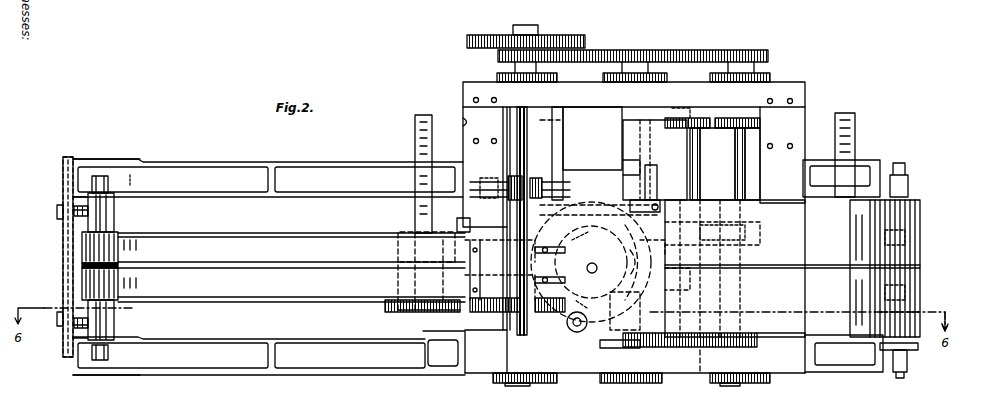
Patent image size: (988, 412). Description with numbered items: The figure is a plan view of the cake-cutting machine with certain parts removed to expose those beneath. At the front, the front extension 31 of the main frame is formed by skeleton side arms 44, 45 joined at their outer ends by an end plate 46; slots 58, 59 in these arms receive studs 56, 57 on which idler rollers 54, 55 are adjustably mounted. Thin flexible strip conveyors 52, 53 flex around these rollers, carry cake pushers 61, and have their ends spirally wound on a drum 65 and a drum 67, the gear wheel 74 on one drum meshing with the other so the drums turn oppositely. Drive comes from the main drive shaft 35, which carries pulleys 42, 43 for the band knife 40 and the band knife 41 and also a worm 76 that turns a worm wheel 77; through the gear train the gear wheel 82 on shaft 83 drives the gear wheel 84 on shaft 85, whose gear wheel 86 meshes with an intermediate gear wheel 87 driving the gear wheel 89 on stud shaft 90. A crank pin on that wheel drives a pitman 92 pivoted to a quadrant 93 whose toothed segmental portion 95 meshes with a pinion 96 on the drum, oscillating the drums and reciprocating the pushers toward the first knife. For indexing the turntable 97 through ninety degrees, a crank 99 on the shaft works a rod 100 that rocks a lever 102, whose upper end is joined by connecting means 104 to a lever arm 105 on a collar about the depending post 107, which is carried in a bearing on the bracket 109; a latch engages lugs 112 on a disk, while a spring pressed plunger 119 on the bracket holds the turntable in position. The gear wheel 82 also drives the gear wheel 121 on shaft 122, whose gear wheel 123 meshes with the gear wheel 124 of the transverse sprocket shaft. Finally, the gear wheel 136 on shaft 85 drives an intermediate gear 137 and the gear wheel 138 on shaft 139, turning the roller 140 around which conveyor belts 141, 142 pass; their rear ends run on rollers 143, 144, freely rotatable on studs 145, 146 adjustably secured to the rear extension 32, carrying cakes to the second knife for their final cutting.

The front extension 31 is at (125, 159).
The rear extension 32 is at (875, 372).
The main drive shaft 35 is at (653, 192).
The band knife 40 is at (425, 114).
The band knife 41 is at (840, 113).
The pulley 42 is at (415, 139).
The pulley 43 is at (856, 129).
The side arm 44 is at (268, 168).
The side arm 45 is at (269, 361).
The end plate 46 is at (63, 248).
The strip conveyor 52 is at (310, 296).
The strip conveyor 53 is at (322, 234).
The idler roller 54 is at (118, 233).
The idler roller 55 is at (118, 300).
The stud 56 is at (110, 187).
The stud 57 is at (112, 353).
The slot 58 is at (150, 193).
The slot 59 is at (150, 336).
The cake pusher 61 is at (528, 252).
The drum 65 is at (405, 232).
The drum 67 is at (540, 226).
The gear wheel 74 is at (405, 312).
The worm 76 is at (512, 180).
The worm wheel 77 is at (548, 185).
The gear wheel 82 is at (660, 50).
The shaft 83 is at (648, 170).
The gear wheel 84 is at (768, 56).
The shaft 85 is at (742, 150).
The gear wheel 86 is at (725, 385).
The intermediate gear wheel 87 is at (700, 372).
The gear wheel 89 is at (620, 348).
The stud shaft 90 is at (630, 385).
The pitman 92 is at (655, 347).
The quadrant 93 is at (608, 320).
The segmental portion 95 is at (622, 276).
The pinion 96 is at (510, 320).
The turntable 97 is at (670, 271).
The crank 99 is at (660, 206).
The rod 100 is at (715, 228).
The lever 102 is at (740, 233).
The connecting means 104 is at (660, 251).
The lever arm 105 is at (595, 236).
The depending post 107 is at (594, 270).
The bracket 109 is at (581, 153).
The lugs 112 is at (591, 262).
The spring pressed plunger 119 is at (540, 352).
The gear wheel 121 is at (497, 56).
The shaft 122 is at (515, 27).
The gear wheel 123 is at (548, 46).
The gear wheel 124 is at (460, 407).
The gear wheel 136 is at (760, 121).
The intermediate gear 137 is at (712, 116).
The gear wheel 138 is at (672, 108).
The shaft 139 is at (682, 143).
The roller 140 is at (720, 257).
The conveyor belt 141 is at (748, 268).
The conveyor belt 142 is at (785, 307).
The roller 143 is at (920, 233).
The roller 144 is at (920, 289).
The stud 145 is at (903, 164).
The stud 146 is at (920, 366).